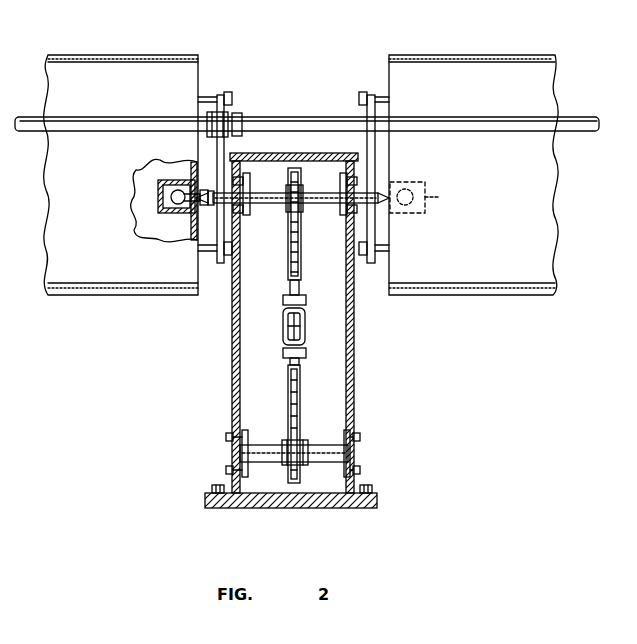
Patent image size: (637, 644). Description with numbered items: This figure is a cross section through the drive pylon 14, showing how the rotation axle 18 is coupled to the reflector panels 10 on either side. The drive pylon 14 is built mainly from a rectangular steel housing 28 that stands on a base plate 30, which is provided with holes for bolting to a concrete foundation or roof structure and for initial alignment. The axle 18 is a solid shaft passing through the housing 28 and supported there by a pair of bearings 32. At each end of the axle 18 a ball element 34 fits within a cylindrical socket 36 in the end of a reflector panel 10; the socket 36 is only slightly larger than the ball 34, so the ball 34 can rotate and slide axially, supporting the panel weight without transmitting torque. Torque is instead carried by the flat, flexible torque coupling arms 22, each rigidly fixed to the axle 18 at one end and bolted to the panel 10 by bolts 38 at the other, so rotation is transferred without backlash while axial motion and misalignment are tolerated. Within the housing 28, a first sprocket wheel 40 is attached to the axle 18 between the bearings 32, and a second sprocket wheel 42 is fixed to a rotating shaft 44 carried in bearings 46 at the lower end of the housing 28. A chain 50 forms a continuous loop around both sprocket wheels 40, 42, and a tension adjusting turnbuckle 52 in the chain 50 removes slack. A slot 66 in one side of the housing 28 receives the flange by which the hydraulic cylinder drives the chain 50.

The reflector panel 10 is at (107, 67).
The drive pylon 14 is at (215, 342).
The rotation axle 18 is at (328, 204).
The torque coupling arm 22 is at (207, 240).
The housing 28 is at (238, 392).
The base plate 30 is at (310, 506).
The bearing 32 is at (252, 180).
The ball element 34 is at (172, 196).
The cylindrical socket 36 is at (157, 193).
The bolt 38 is at (228, 98).
The first sprocket wheel 40 is at (288, 212).
The second sprocket wheel 42 is at (285, 437).
The rotating shaft 44 is at (320, 447).
The bearing 46 is at (240, 455).
The chain 50 is at (287, 380).
The tension adjusting turnbuckle 52 is at (285, 313).
The slot 66 is at (286, 289).